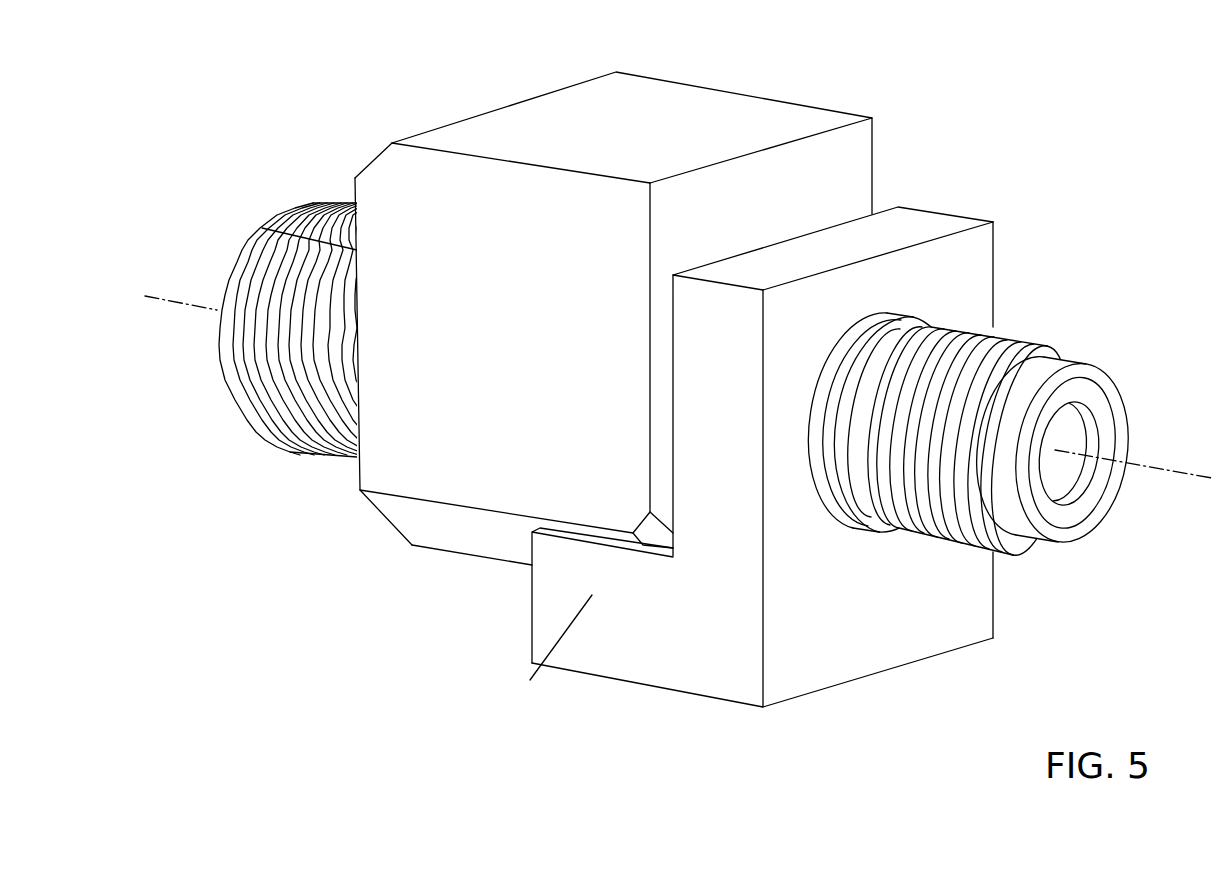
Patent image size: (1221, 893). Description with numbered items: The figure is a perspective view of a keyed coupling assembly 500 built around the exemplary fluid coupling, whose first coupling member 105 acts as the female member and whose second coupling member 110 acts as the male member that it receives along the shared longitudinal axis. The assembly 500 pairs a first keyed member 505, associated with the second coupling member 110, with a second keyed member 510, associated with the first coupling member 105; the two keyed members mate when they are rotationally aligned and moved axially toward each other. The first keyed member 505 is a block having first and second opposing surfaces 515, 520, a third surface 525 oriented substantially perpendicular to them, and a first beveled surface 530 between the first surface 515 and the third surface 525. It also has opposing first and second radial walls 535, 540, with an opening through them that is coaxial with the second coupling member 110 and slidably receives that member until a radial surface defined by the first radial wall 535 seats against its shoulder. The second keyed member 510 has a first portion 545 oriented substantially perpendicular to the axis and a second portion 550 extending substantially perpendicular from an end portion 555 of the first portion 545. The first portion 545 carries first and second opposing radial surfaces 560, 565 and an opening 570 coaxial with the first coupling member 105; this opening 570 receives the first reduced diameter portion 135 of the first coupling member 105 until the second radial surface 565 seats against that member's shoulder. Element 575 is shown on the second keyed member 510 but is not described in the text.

The first coupling member 105 is at (1037, 562).
The second coupling member 110 is at (257, 460).
The first reduced diameter portion 135 is at (838, 508).
The keyed coupling assembly 500 is at (1043, 114).
The first keyed member 505 is at (455, 113).
The second keyed member 510 is at (707, 711).
The first surface 515 is at (517, 344).
The second surface 520 is at (873, 137).
The third surface 525 is at (470, 556).
The first beveled surface 530 is at (383, 516).
The first radial wall 535 is at (356, 198).
The second radial wall 540 is at (770, 165).
The first portion 545 is at (993, 305).
The second portion 550 is at (588, 684).
The end portion 555 is at (779, 710).
The first radial surface 560 is at (967, 262).
The second radial surface 565 is at (836, 226).
The opening 570 is at (897, 315).
The tab edge 575 is at (530, 680).